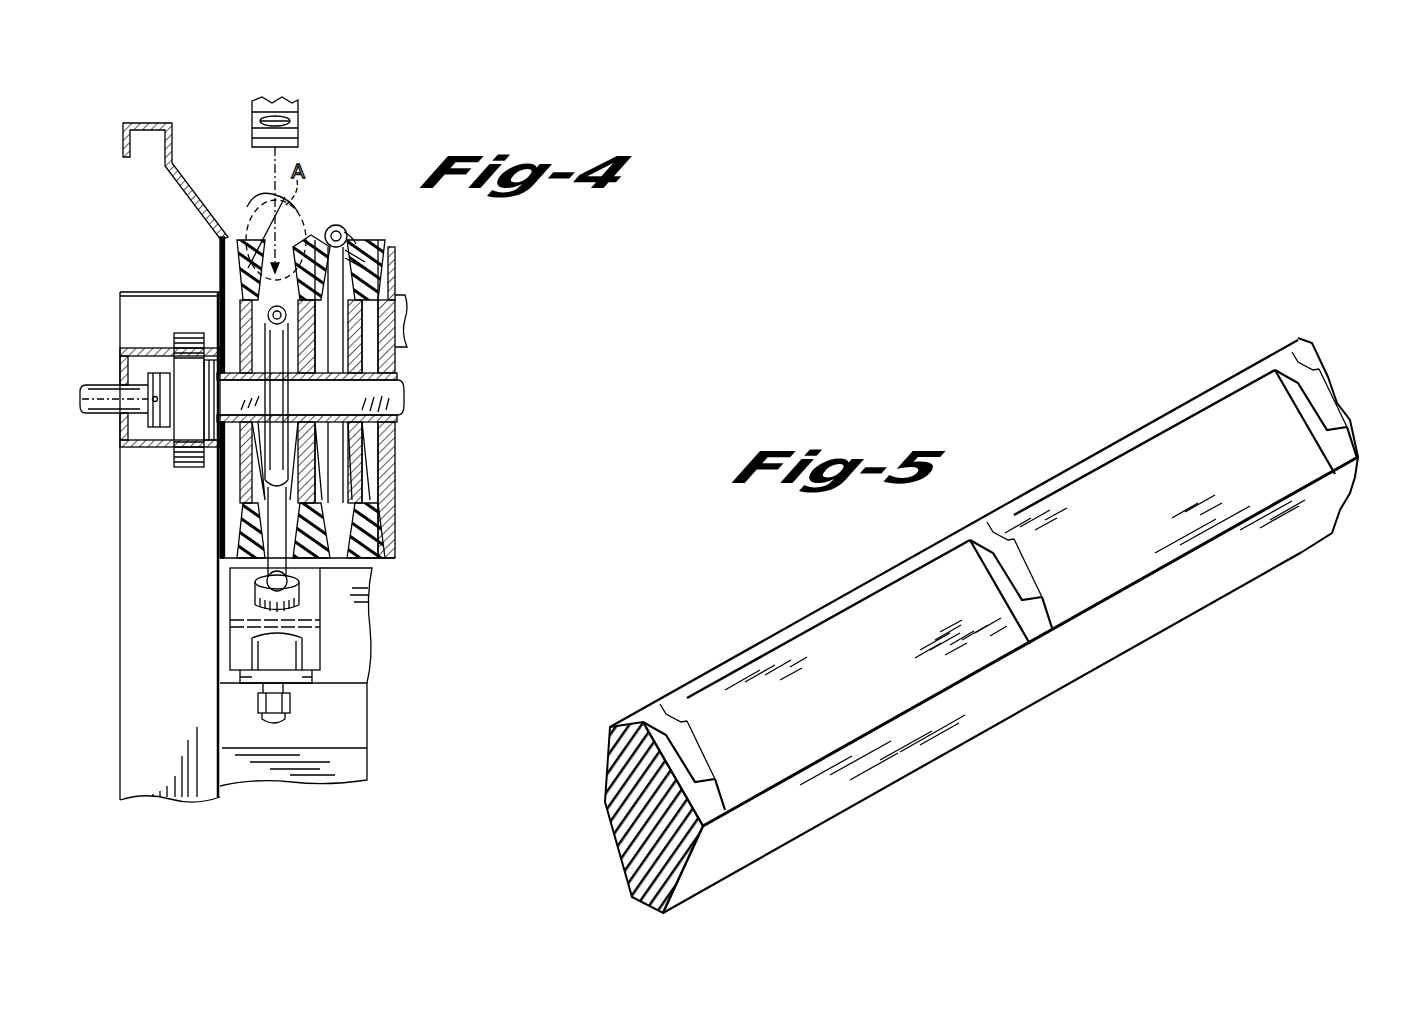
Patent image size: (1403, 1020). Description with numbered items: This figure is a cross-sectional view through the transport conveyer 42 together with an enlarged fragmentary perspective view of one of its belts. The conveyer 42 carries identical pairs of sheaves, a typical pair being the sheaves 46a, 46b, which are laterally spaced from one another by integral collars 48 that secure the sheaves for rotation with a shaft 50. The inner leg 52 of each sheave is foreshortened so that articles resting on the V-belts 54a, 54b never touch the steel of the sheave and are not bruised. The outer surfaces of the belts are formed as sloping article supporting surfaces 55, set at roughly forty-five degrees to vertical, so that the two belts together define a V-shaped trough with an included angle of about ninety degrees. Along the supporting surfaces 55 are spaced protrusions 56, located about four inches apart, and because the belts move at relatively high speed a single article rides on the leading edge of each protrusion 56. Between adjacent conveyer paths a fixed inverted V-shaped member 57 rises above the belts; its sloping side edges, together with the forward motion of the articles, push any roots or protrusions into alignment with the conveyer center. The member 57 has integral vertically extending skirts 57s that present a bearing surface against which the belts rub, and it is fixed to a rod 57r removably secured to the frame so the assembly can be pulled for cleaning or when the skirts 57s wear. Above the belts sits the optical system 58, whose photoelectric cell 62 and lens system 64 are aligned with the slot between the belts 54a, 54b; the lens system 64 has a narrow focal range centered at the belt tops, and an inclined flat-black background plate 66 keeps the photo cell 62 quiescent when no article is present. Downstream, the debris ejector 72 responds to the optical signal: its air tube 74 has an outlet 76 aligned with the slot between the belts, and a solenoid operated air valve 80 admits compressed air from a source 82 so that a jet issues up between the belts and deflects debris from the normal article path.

In FIG. 4, the transport conveyer 42 is at (450, 226).
In FIG. 4, the sheave 46a is at (250, 465).
In FIG. 4, the sheave 46b is at (307, 473).
In FIG. 4, the integral collar 48 is at (337, 381).
In FIG. 4, the shaft 50 is at (406, 390).
In FIG. 4, the inner leg 52 is at (243, 280).
In FIG. 4, the V-belt 54a is at (230, 256).
In FIG. 5, the V-belt 54a is at (610, 750).
In FIG. 4, the V-belt 54b is at (307, 238).
In FIG. 4, the sloping article supporting surface 55 is at (263, 220).
In FIG. 5, the sloping article supporting surface 55 is at (848, 628).
In FIG. 4, the protrusion 56 is at (380, 250).
In FIG. 5, the protrusion 56 is at (693, 747).
In FIG. 4, the inverted V-shaped member 57 is at (338, 228).
In FIG. 4, the skirt 57s is at (352, 232).
In FIG. 4, the rod 57r is at (365, 258).
In FIG. 4, the optical system 58 is at (305, 104).
In FIG. 4, the photoelectric cell 62 is at (273, 102).
In FIG. 4, the optical lens system 64 is at (260, 122).
In FIG. 4, the background plate 66 is at (374, 592).
In FIG. 4, the debris ejector 72 is at (340, 623).
In FIG. 4, the air tube 74 is at (268, 578).
In FIG. 4, the outlet 76 is at (268, 314).
In FIG. 4, the solenoid operated air valve 80 is at (238, 610).
In FIG. 4, the source 82 is at (362, 695).